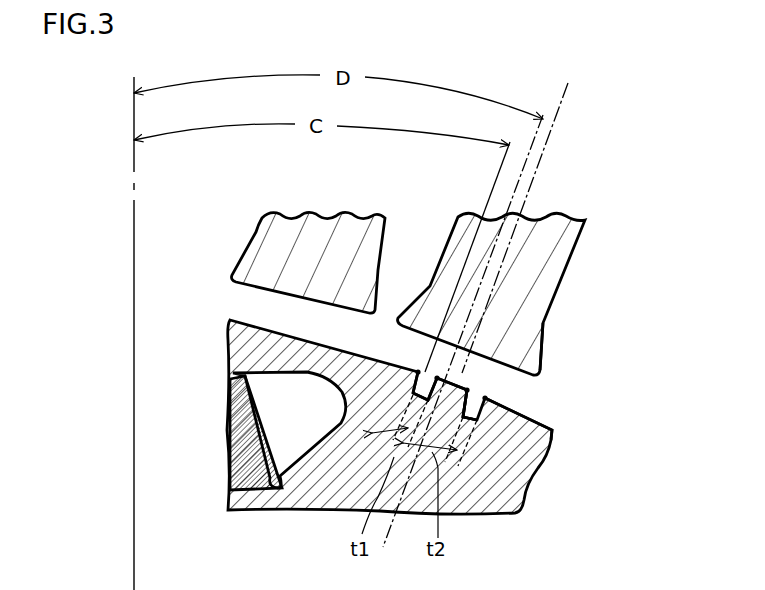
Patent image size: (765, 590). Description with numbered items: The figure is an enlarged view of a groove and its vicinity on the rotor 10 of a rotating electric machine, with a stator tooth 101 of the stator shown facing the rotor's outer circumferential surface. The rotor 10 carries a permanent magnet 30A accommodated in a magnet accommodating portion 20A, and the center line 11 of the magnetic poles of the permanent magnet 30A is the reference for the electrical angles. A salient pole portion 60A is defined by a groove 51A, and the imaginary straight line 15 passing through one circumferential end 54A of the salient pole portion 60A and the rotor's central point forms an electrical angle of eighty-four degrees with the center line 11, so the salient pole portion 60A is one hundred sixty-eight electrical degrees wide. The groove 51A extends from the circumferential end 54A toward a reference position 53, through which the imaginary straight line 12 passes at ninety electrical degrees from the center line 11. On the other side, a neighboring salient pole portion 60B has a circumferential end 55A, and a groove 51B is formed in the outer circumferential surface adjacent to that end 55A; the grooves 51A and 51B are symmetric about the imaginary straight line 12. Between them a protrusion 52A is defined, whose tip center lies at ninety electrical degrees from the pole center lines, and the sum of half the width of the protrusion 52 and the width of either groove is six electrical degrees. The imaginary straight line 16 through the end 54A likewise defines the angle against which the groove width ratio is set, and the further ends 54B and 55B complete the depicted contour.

The rotor 10 is at (489, 500).
The center line of the magnetic poles 11 is at (133, 228).
The imaginary straight line 12 is at (531, 196).
The imaginary straight line 15 is at (497, 172).
The imaginary straight line 16 is at (523, 217).
The magnet accommodating portion 20A is at (324, 434).
The permanent magnet 30A is at (248, 447).
The groove 51A is at (420, 372).
The groove 51B is at (539, 372).
The protrusion 52 is at (465, 388).
The protrusion 52A is at (455, 408).
The reference position 53 is at (456, 378).
The circumferential end 54A is at (417, 370).
The second corner portion 54B is at (436, 376).
The circumferential end 55A is at (487, 398).
The second projection 55B is at (446, 382).
The salient pole portion 60A is at (297, 328).
The salient pole portion 60B is at (550, 422).
The stator tooth 101 is at (541, 270).